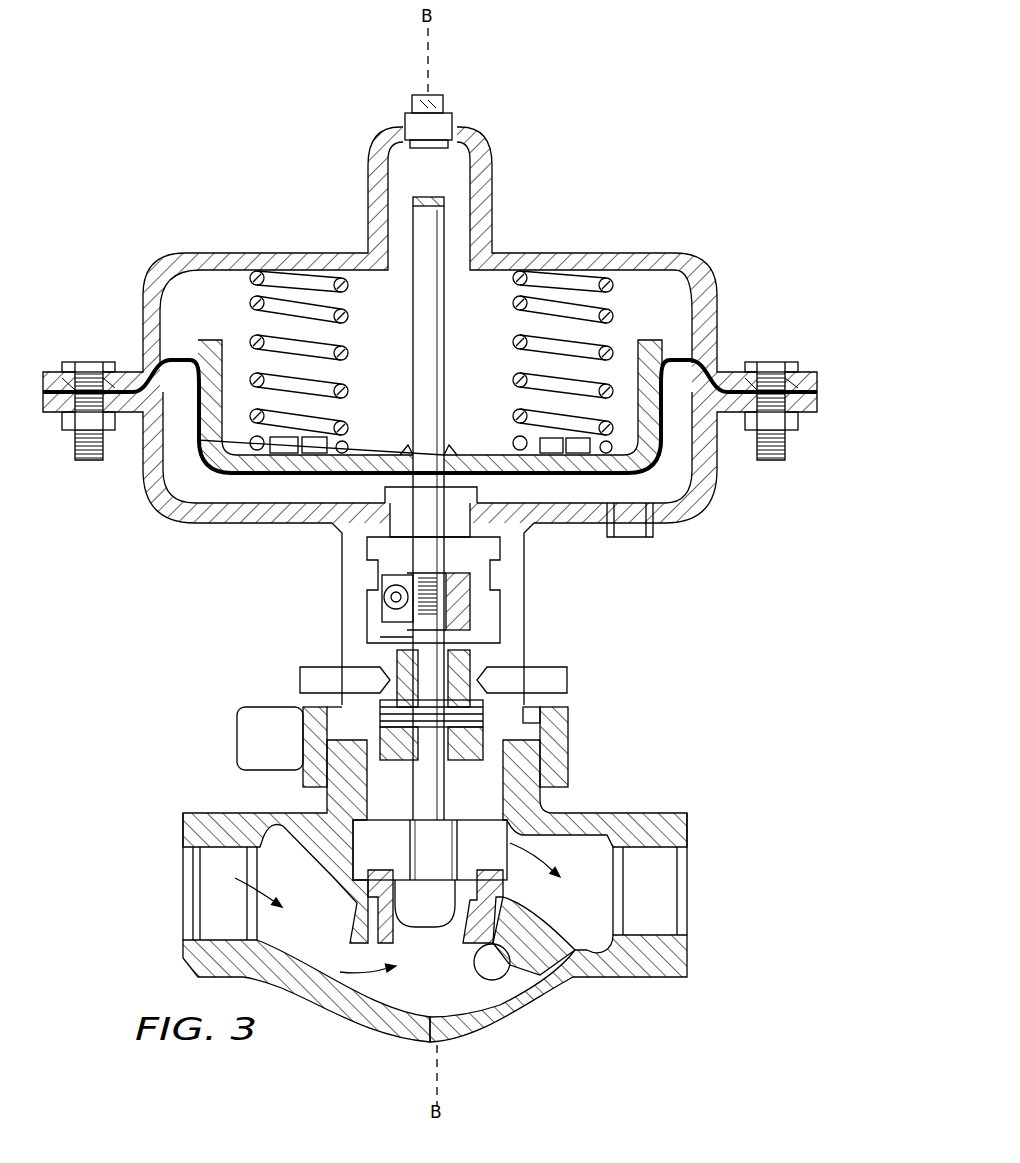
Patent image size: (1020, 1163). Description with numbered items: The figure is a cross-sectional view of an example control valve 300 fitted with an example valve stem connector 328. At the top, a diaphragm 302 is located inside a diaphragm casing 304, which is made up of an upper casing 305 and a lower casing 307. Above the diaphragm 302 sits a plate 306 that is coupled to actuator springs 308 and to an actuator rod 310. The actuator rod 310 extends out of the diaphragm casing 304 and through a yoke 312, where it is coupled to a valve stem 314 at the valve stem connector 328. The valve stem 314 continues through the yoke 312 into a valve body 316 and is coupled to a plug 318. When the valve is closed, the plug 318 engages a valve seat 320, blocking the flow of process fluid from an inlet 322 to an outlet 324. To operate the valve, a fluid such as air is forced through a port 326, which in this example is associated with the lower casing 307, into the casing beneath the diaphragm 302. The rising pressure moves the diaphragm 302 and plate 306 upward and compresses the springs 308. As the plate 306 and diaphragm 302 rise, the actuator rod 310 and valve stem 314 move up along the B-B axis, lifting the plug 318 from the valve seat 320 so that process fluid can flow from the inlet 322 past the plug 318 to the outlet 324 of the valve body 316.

The control valve 300 is at (631, 109).
The diaphragm 302 is at (198, 360).
The diaphragm casing 304 is at (225, 253).
The upper casing 305 is at (157, 268).
The plate 306 is at (672, 340).
The lower casing 307 is at (205, 523).
The actuator springs 308 is at (265, 298).
The actuator rod 310 is at (445, 229).
The yoke 312 is at (342, 580).
The valve stem 314 is at (427, 643).
The valve body 316 is at (205, 813).
The plug 318 is at (425, 945).
The valve seat 320 is at (353, 937).
The inlet 322 is at (183, 888).
The outlet 324 is at (690, 890).
The port 326 is at (640, 538).
The valve stem connector 328 is at (475, 617).